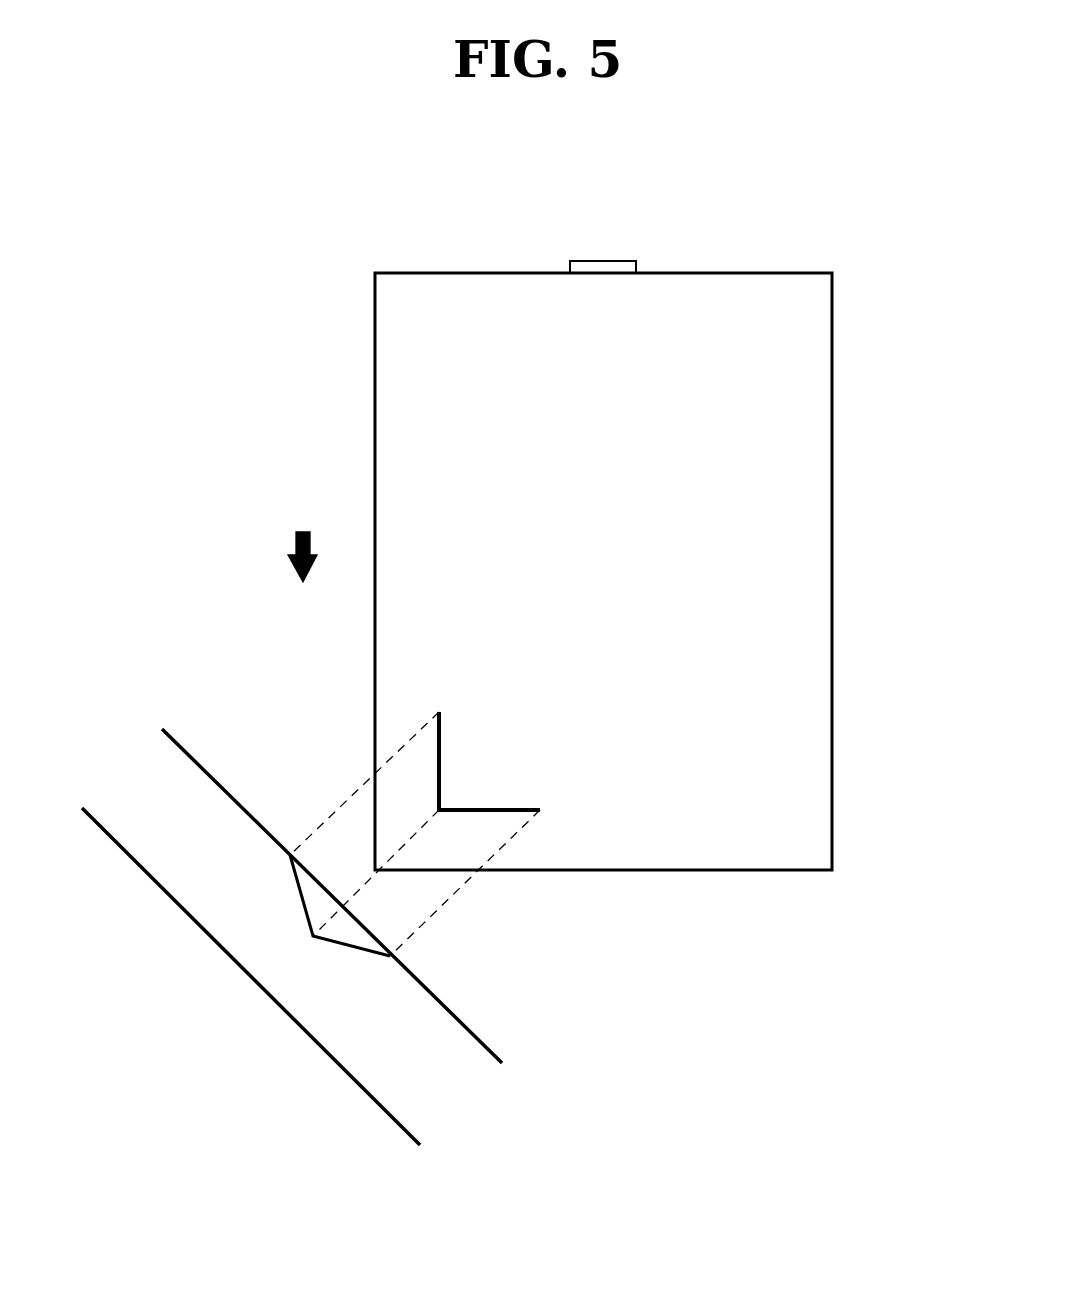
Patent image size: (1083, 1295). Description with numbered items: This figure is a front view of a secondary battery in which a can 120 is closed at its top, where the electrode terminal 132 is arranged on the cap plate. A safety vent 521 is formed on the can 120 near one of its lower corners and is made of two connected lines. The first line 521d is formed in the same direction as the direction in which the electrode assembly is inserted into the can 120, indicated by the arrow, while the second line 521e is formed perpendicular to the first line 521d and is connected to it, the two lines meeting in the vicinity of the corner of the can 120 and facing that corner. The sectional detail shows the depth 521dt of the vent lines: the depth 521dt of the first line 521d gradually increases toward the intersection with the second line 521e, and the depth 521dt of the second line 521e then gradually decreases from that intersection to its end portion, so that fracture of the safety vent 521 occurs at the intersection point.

The can 120 is at (796, 535).
The electrode terminal 132 is at (604, 260).
The safety vent 521 is at (559, 861).
The first line 521d is at (438, 758).
The second line 521e is at (520, 811).
The depth 521dt is at (232, 802).